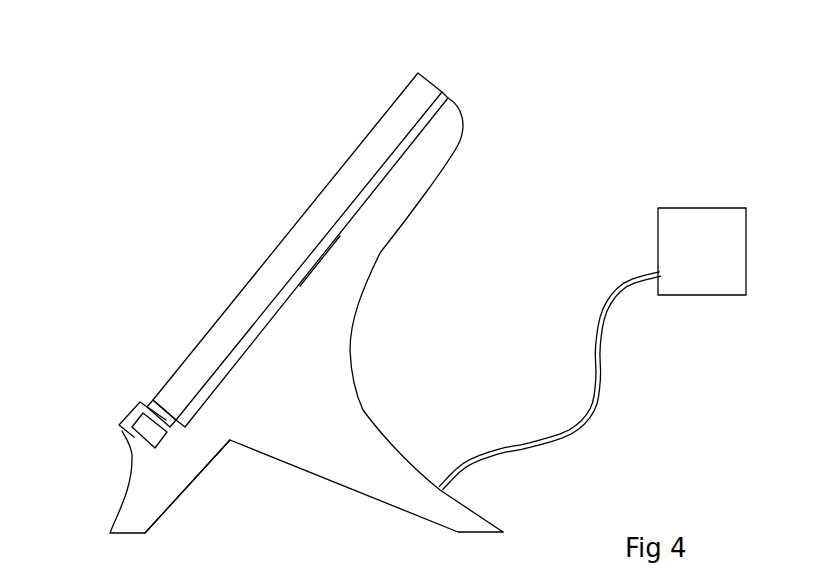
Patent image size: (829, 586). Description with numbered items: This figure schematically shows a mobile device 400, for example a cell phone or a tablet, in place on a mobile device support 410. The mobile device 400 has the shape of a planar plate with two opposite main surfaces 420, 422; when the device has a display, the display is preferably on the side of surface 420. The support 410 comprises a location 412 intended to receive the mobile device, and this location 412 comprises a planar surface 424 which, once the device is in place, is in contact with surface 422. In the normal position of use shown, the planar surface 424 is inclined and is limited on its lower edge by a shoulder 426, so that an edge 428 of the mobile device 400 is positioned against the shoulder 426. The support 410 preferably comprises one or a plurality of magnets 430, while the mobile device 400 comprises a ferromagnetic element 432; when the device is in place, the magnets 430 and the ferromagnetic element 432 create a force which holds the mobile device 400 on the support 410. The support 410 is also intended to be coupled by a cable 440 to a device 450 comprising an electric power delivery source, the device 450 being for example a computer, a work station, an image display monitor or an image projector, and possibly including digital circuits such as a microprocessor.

The mobile device 400 is at (289, 230).
The mobile device support 410 is at (356, 382).
The location 412 is at (305, 282).
The main surface 420 is at (386, 111).
The main surface 422 is at (447, 98).
The planar surface 424 is at (346, 228).
The shoulder 426 is at (170, 433).
The edge 428 is at (168, 410).
The magnet 430 is at (132, 442).
The ferromagnetic element 432 is at (153, 399).
The cable 440 is at (493, 450).
The device 450 is at (678, 243).